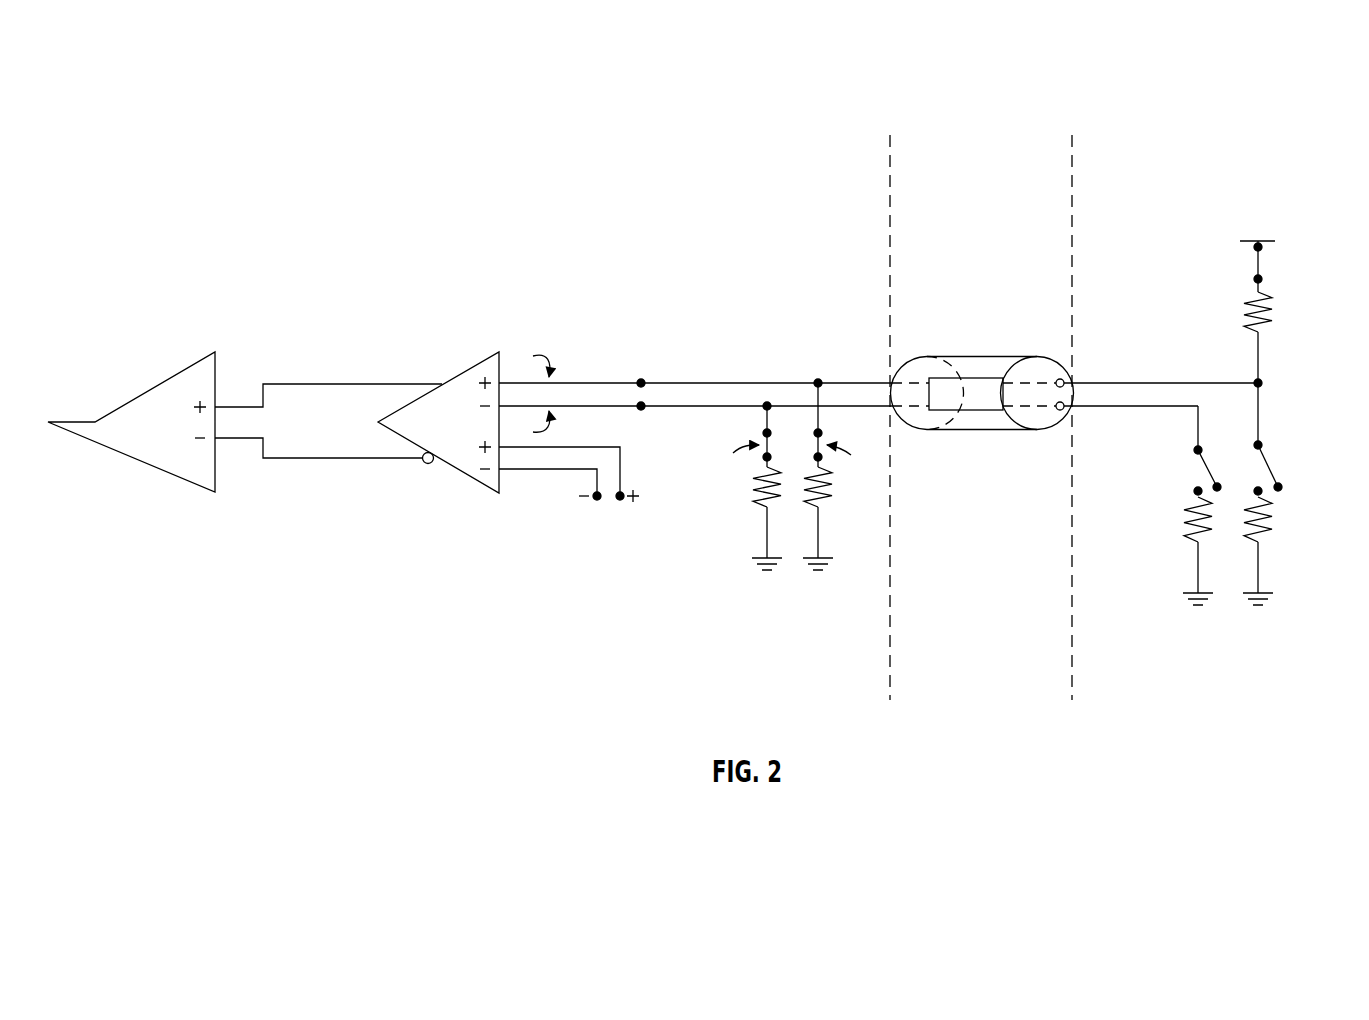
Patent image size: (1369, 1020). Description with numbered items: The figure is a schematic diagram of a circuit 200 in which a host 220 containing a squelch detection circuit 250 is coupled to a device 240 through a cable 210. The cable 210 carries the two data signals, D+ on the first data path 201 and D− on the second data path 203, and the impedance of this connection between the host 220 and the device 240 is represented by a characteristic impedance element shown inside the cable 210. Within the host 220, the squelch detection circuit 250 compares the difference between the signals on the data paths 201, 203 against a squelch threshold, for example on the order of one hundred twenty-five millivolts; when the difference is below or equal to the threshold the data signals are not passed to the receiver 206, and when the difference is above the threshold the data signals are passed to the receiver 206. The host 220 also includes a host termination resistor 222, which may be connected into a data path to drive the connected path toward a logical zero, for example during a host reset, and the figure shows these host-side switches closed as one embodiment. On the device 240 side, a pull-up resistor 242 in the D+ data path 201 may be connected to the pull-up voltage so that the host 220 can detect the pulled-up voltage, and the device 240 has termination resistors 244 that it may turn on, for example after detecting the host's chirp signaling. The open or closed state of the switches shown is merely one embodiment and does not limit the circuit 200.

The circuit 200 is at (224, 146).
The receiver 206 is at (162, 430).
The squelch detection circuit 250 is at (442, 506).
The D+ data line 201 is at (640, 375).
The D- data line 203 is at (640, 412).
The host 220 is at (832, 193).
The host termination resistor 222 is at (845, 474).
The cable 210 is at (1027, 193).
The device 240 is at (1210, 193).
The pull-up resistor 242 is at (1262, 329).
The termination resistors 244 is at (1337, 596).